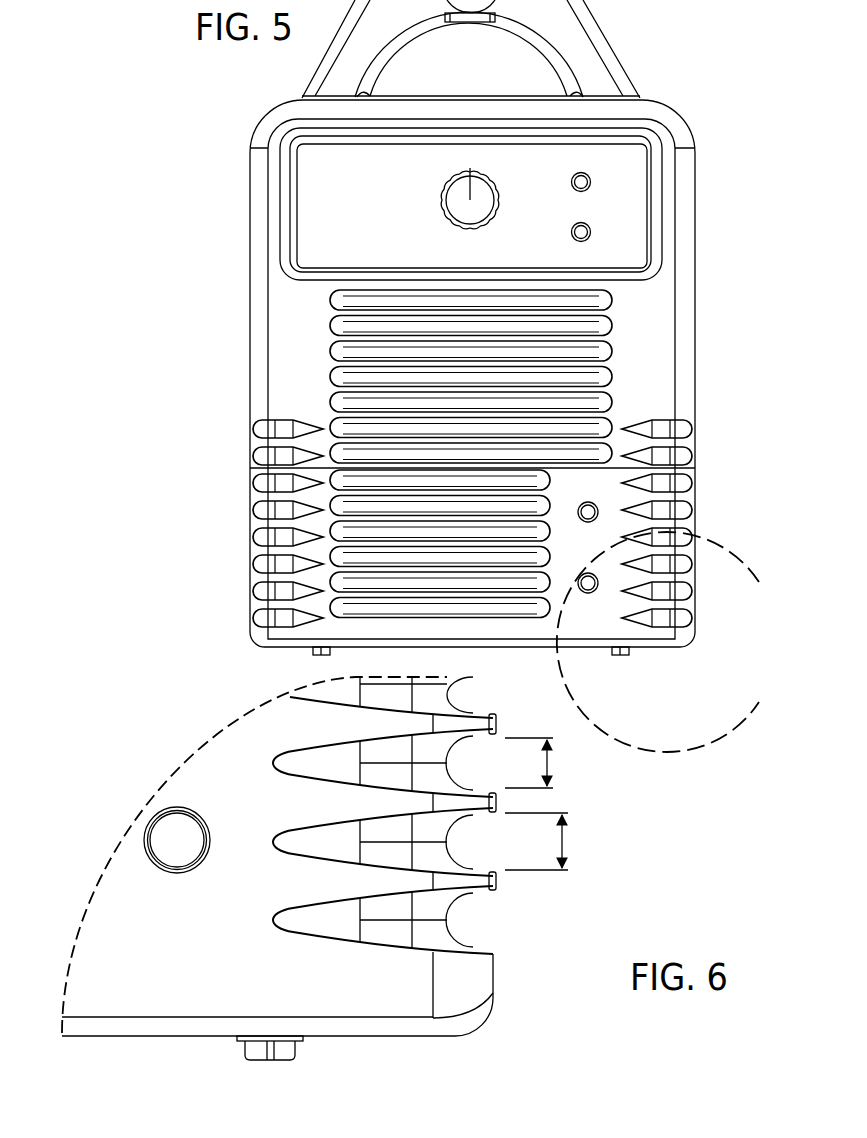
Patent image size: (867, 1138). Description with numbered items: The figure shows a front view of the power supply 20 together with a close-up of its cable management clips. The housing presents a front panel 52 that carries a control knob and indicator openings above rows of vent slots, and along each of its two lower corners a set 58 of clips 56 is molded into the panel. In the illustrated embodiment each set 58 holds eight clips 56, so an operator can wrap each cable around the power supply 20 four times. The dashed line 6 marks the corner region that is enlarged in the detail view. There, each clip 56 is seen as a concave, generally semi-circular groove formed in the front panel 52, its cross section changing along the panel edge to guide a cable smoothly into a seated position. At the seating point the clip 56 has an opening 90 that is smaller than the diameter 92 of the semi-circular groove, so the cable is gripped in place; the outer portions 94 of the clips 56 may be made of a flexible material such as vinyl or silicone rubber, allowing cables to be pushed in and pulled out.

In FIG. 5, the power supply 20 is at (183, 124).
In FIG. 5, the front panel 52 is at (687, 257).
In FIG. 5, the set of clips 58 is at (222, 474).
In FIG. 5, the clip 56 is at (688, 558).
In FIG. 6, the clip 56 is at (547, 929).
In FIG. 5, the line 6- 6 is at (748, 572).
In FIG. 6, the outer portion of clip 94 is at (486, 711).
In FIG. 6, the opening 90 is at (553, 763).
In FIG. 6, the diameter 92 is at (568, 838).